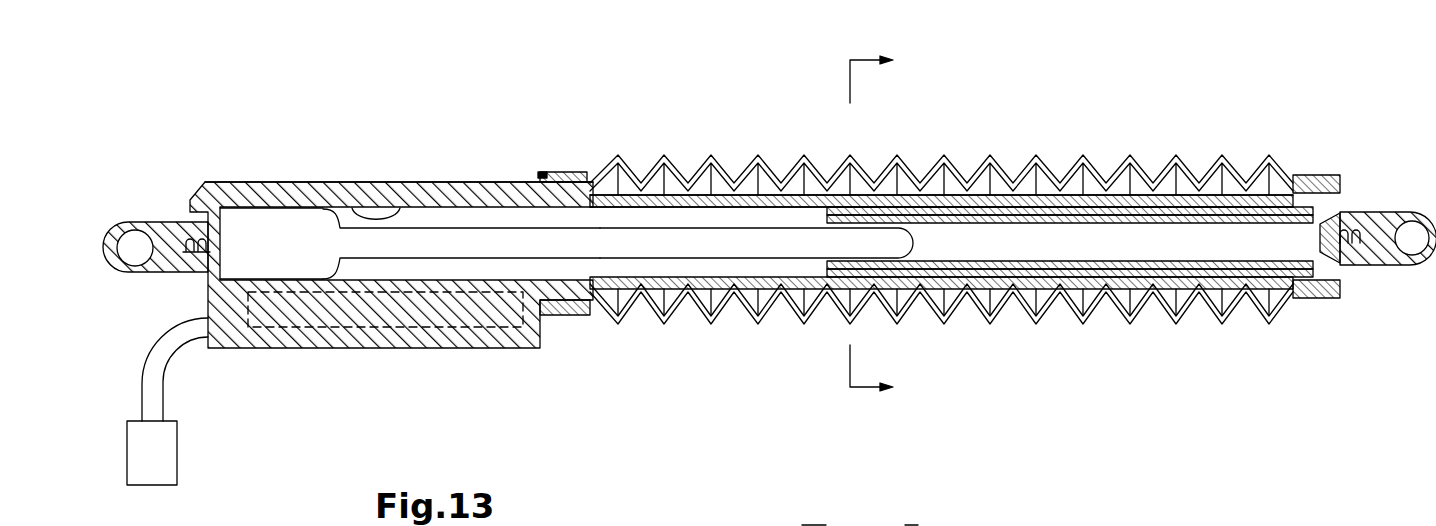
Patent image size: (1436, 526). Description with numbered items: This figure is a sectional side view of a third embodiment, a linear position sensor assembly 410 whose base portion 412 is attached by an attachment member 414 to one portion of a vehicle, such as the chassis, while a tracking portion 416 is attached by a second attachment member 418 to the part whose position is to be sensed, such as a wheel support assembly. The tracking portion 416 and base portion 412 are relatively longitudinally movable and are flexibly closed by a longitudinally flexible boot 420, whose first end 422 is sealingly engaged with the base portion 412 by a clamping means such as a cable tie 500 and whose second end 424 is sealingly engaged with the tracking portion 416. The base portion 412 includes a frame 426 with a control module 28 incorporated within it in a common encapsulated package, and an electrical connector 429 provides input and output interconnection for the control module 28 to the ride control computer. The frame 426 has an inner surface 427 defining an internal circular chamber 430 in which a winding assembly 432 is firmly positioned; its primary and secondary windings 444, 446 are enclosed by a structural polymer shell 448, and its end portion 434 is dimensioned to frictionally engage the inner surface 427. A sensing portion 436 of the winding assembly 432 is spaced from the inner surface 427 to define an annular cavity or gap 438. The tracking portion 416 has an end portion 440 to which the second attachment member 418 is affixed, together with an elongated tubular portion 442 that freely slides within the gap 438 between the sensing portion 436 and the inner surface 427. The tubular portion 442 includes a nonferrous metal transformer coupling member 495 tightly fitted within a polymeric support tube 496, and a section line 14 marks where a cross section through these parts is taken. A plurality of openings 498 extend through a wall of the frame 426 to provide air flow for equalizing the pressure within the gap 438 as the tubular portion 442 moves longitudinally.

The linear position sensor assembly 410 is at (669, 112).
The base portion 412 is at (294, 180).
The attachment member 414 is at (113, 275).
The tracking portion 416 is at (1337, 309).
The second attachment member 418 is at (1414, 212).
The longitudinally flexible boot 420 is at (1132, 158).
The first end 422 is at (592, 316).
The second end 424 is at (1300, 300).
The frame 426 is at (438, 205).
The inner surface 427 is at (385, 213).
The electrical connector 429 is at (177, 456).
The internal circular chamber 430 is at (498, 220).
The winding assembly 432 is at (423, 222).
The end portion 434 is at (259, 207).
The sensing portion 436 is at (681, 200).
The annular cavity or gap 438 is at (728, 289).
The end portion 440 is at (1343, 188).
The elongated tubular portion 442 is at (1003, 270).
The primary winding 444 is at (805, 525).
The secondary winding 446 is at (918, 525).
The structural polymer shell 448 is at (760, 240).
The nonferrous metal transformer coupling member 495 is at (997, 215).
The polymeric support tube 496 is at (980, 207).
The openings 498 is at (685, 324).
The cable tie 500 is at (562, 176).
The control module 28 is at (433, 348).
The section line 14- 14 is at (890, 226).